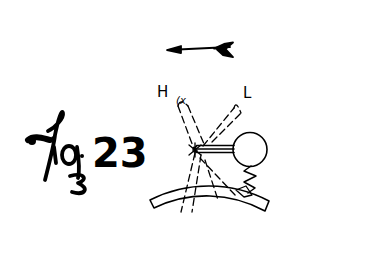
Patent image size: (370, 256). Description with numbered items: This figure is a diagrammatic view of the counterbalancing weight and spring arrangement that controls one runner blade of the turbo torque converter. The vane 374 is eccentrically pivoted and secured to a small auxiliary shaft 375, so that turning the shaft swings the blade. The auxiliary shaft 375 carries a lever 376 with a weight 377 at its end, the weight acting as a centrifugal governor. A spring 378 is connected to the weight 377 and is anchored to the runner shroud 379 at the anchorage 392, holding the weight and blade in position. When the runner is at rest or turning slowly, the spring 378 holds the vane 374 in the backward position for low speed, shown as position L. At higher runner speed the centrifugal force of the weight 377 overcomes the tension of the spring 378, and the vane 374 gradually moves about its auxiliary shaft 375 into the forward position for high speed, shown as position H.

The vane 374 is at (190, 98).
The auxiliary shaft 375 is at (191, 151).
The lever 376 is at (234, 134).
The weight 377 is at (258, 149).
The spring 378 is at (257, 178).
The runner shroud 379 is at (209, 210).
The spring anchorage 392 is at (251, 192).